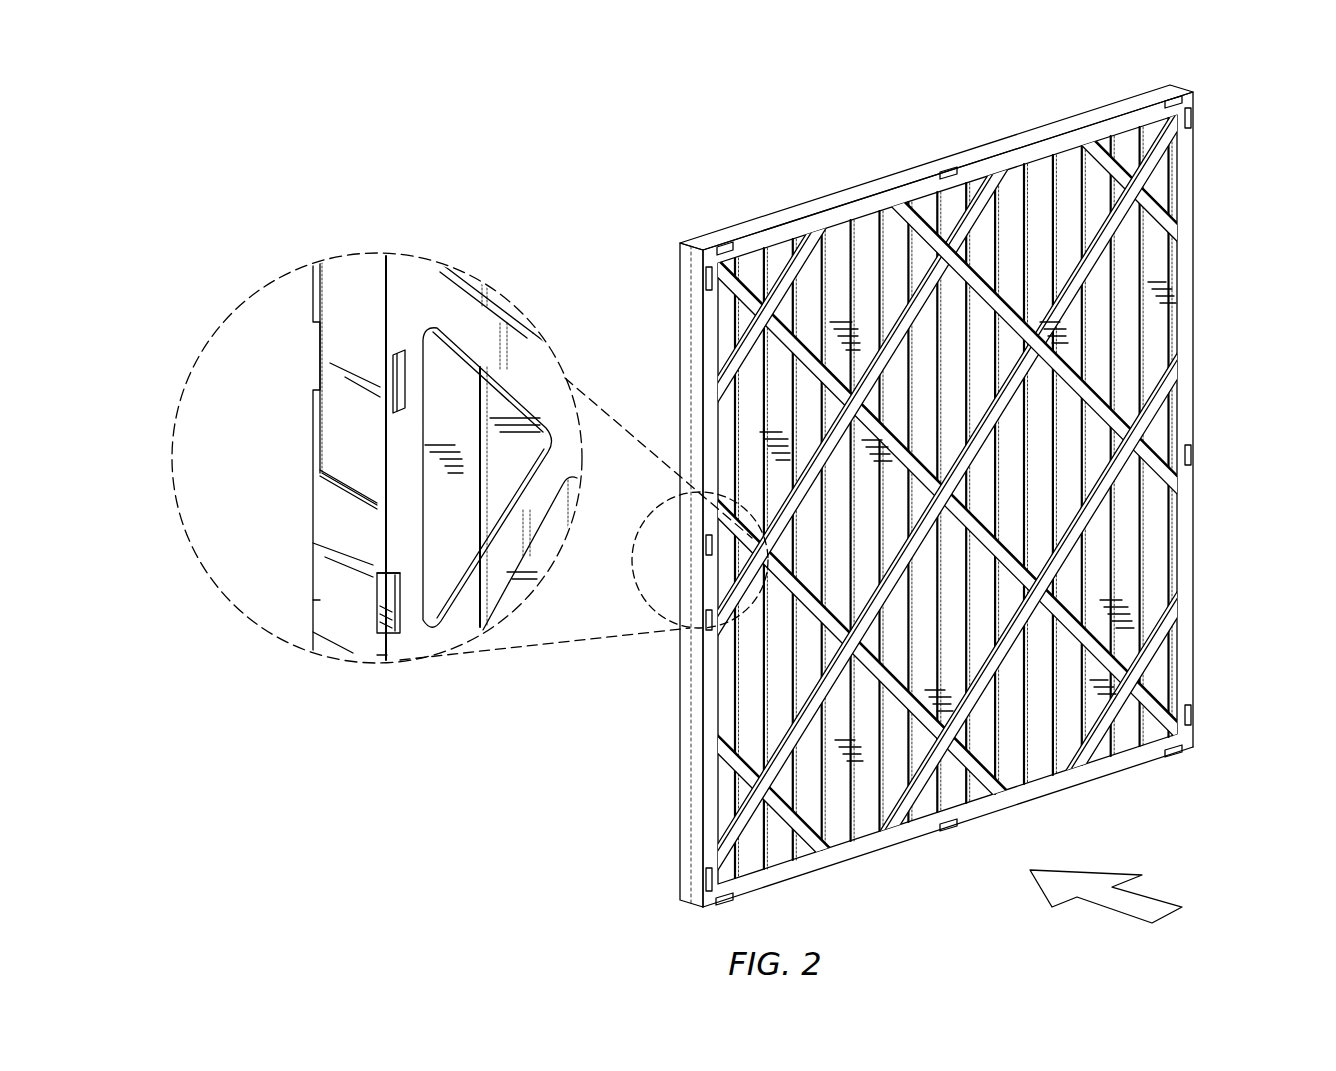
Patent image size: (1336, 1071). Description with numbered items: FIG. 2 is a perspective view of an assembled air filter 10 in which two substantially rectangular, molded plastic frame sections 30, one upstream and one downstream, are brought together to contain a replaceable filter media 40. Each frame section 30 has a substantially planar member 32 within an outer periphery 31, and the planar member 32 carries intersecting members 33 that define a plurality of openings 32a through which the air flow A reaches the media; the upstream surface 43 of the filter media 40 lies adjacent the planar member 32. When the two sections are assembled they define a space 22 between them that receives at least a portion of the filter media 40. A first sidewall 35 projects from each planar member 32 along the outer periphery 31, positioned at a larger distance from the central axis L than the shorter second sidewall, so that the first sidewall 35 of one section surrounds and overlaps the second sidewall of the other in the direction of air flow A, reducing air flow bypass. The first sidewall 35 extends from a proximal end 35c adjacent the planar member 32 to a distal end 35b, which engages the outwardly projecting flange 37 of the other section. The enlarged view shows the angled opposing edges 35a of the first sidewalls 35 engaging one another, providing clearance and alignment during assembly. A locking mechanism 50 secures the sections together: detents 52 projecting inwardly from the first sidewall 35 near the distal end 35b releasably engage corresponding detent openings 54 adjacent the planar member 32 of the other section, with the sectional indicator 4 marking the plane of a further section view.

The air filter 10 is at (578, 188).
The space 22 is at (845, 265).
The frame section 30 is at (765, 240).
The outer periphery 31 is at (1152, 776).
The planar member 32 is at (1195, 502).
The openings 32a is at (1152, 578).
The intersecting members 33 is at (1148, 425).
The first sidewall 35 is at (688, 272).
The opposing edges 35a is at (362, 480).
The distal end 35b is at (385, 660).
The proximal end 35c is at (305, 600).
The flange 37 is at (1022, 130).
The filter media 40 is at (1162, 255).
The upstream surface 43 is at (1157, 280).
The locking mechanism 50 is at (703, 232).
The detent 52 is at (404, 617).
The detent opening 54 is at (303, 372).
The section line 4 is at (632, 572).
The central axis L is at (990, 517).
The air flow A is at (1157, 897).